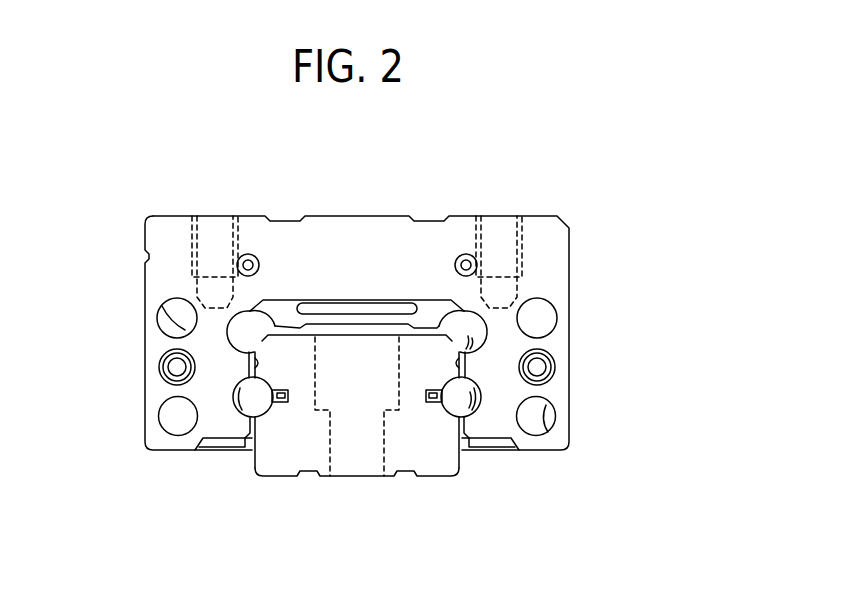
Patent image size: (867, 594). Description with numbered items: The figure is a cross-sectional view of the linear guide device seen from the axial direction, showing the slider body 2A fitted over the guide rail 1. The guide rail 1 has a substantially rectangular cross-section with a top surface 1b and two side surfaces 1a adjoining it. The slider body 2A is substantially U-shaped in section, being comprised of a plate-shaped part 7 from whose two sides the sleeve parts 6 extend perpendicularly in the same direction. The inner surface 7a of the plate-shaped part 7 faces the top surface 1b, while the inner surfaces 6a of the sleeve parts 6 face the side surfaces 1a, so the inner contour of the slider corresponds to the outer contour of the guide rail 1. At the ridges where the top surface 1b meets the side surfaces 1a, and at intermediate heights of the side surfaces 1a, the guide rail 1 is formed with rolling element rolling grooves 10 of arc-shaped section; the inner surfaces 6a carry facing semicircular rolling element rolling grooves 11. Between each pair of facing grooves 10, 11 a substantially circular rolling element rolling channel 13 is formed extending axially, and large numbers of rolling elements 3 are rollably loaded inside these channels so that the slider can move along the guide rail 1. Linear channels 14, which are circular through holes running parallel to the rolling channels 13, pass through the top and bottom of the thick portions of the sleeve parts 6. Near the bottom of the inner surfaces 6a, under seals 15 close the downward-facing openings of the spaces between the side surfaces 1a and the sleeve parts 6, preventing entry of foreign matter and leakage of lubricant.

The slider body 2A is at (512, 195).
The guide rail 1 is at (353, 462).
The side surface 1a is at (254, 463).
The top surface 1b is at (360, 331).
The rolling element 3 is at (480, 380).
The sleeve part 6 is at (157, 389).
The inner surface of sleeve part 6a is at (248, 356).
The plate-shaped part 7 is at (322, 227).
The inner surface of plate-shaped part 7a is at (363, 305).
The rolling element rolling groove 10 is at (478, 343).
The rolling element rolling groove 11 is at (478, 326).
The rolling element rolling channel 13 is at (634, 276).
The linear channel 14 is at (178, 327).
The under seal 15 is at (233, 444).